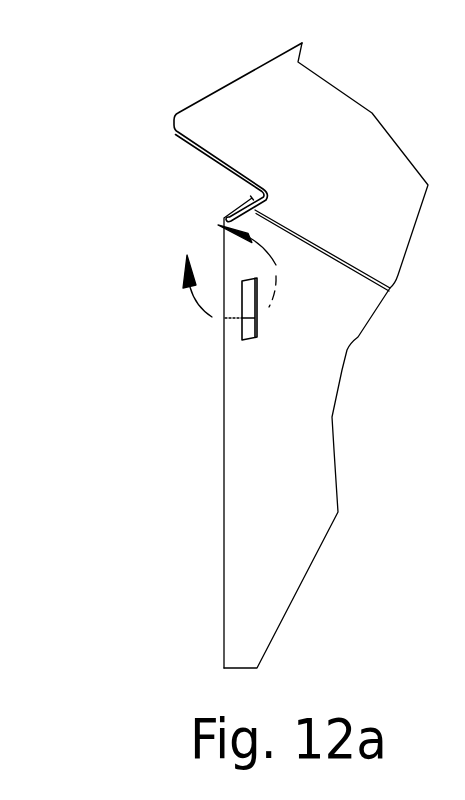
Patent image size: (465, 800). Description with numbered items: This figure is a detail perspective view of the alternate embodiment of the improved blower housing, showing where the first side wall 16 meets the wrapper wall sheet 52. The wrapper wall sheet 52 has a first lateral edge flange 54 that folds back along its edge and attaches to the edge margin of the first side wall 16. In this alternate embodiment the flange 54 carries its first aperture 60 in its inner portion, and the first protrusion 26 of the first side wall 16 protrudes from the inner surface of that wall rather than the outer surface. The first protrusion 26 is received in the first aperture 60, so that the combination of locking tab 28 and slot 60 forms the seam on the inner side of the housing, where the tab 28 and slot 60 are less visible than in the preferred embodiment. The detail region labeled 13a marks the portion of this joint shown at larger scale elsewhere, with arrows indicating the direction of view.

The first side wall 16 is at (255, 97).
The hook portion 13a is at (225, 270).
The wrapper wall sheet 52 is at (340, 337).
The first lateral edge flange 54 is at (238, 448).
The first protrusion 26 is at (146, 343).
The locking tab 28 is at (146, 343).
The first aperture 60 is at (250, 318).